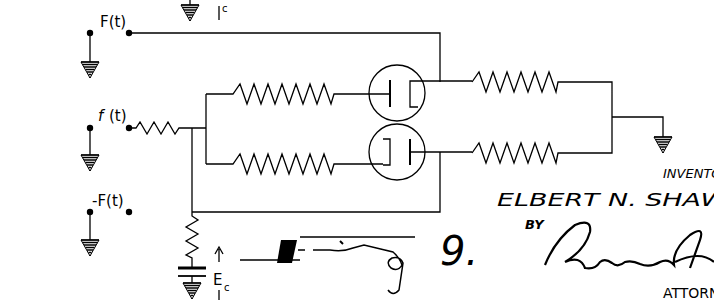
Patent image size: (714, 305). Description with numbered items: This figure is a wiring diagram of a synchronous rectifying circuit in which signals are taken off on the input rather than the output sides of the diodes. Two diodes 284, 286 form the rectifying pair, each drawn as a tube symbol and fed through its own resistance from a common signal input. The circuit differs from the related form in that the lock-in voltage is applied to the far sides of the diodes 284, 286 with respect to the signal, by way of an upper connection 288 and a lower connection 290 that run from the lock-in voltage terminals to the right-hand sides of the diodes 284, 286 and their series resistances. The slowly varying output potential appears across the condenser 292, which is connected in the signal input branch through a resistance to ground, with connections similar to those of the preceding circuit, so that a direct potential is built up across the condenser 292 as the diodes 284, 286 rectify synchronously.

The diode 284 is at (373, 81).
The diode 286 is at (390, 179).
The conductor lead 288 is at (336, 32).
The conductor lead 290 is at (281, 214).
The condenser 292 is at (180, 268).